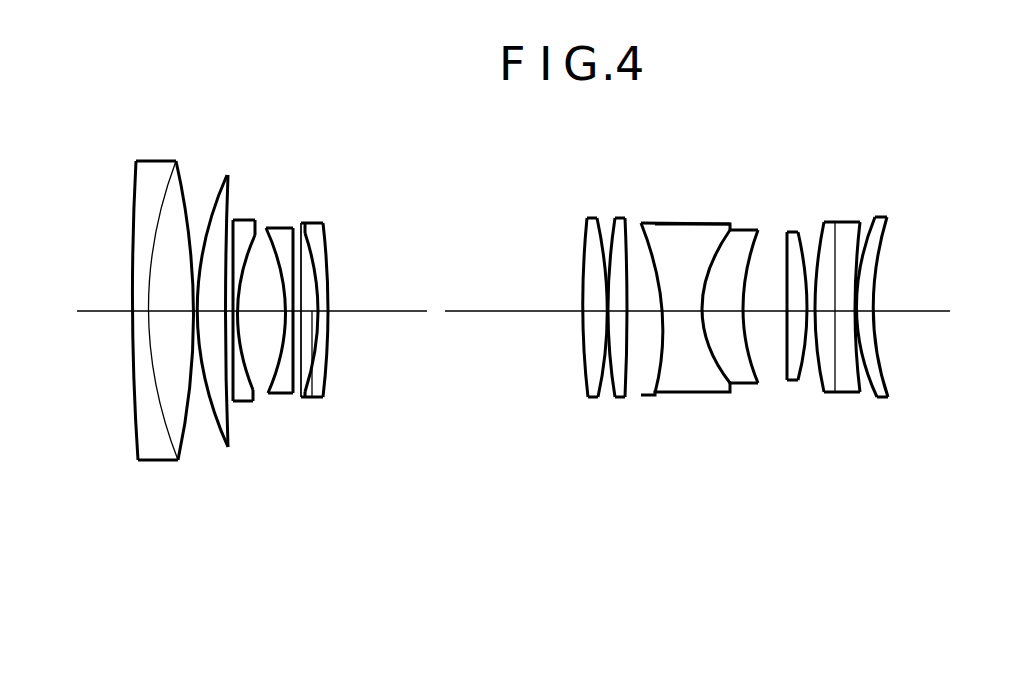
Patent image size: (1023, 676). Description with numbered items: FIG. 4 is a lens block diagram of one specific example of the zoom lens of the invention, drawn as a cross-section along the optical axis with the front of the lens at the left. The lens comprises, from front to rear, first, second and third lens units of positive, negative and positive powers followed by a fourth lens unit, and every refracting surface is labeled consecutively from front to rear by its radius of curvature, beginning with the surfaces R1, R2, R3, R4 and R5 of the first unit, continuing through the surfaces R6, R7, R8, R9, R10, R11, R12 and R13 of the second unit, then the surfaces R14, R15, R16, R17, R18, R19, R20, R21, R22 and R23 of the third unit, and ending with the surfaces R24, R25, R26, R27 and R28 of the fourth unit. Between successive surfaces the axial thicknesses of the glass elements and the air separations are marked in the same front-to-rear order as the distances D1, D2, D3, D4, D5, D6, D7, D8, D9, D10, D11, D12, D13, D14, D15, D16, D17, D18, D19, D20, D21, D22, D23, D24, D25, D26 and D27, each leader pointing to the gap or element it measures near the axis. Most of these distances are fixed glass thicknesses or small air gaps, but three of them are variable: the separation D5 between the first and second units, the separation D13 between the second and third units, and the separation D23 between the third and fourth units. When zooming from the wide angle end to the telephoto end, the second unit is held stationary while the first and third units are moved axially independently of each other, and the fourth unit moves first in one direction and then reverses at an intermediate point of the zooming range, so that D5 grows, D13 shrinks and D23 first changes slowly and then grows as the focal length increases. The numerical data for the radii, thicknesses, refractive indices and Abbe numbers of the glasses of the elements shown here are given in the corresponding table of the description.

The radius of curvature R1 is at (130, 222).
The radius of curvature R2 is at (176, 222).
The radius of curvature R3 is at (190, 210).
The radius of curvature R4 is at (203, 215).
The radius of curvature R5 is at (227, 176).
The radius of curvature R6 is at (233, 220).
The radius of curvature R7 is at (242, 220).
The radius of curvature R8 is at (267, 230).
The radius of curvature R9 is at (293, 229).
The radius of curvature R10 is at (304, 226).
The radius of curvature R11 is at (313, 226).
The radius of curvature R12 is at (323, 229).
The radius of curvature R13 is at (332, 255).
The radius of curvature R14 is at (585, 250).
The radius of curvature R15 is at (603, 246).
The radius of curvature R16 is at (610, 228).
The radius of curvature R17 is at (620, 218).
The radius of curvature R18 is at (638, 222).
The radius of curvature R19 is at (662, 224).
The radius of curvature R20 is at (714, 260).
The radius of curvature R21 is at (745, 245).
The radius of curvature R22 is at (786, 258).
The radius of curvature R23 is at (806, 257).
The radius of curvature R24 is at (818, 255).
The radius of curvature R25 is at (836, 222).
The radius of curvature R26 is at (862, 223).
The radius of curvature R27 is at (876, 218).
The radius of curvature R28 is at (886, 242).
The axial thickness D1 is at (139, 313).
The axial thickness D2 is at (172, 316).
The air separation D3 is at (194, 318).
The axial thickness D4 is at (213, 330).
The variable air separation D5 is at (228, 335).
The axial thickness D6 is at (238, 330).
The air separation D7 is at (256, 316).
The axial thickness D8 is at (288, 316).
The air separation D9 is at (292, 345).
The axial thickness D10 is at (297, 320).
The air separation D11 is at (318, 320).
The axial thickness D12 is at (329, 355).
The variable air separation D13 is at (428, 316).
The axial thickness D14 is at (588, 316).
The air separation D15 is at (607, 316).
The axial thickness D16 is at (628, 322).
The air separation D17 is at (652, 330).
The axial thickness D18 is at (668, 325).
The axial thickness D19 is at (673, 316).
The axial thickness D20 is at (718, 316).
The air separation D21 is at (766, 320).
The axial thickness D22 is at (795, 318).
The variable air separation D23 is at (815, 316).
The axial thickness D24 is at (838, 393).
The axial thickness D25 is at (860, 316).
The air separation D26 is at (877, 340).
The axial thickness D27 is at (880, 348).